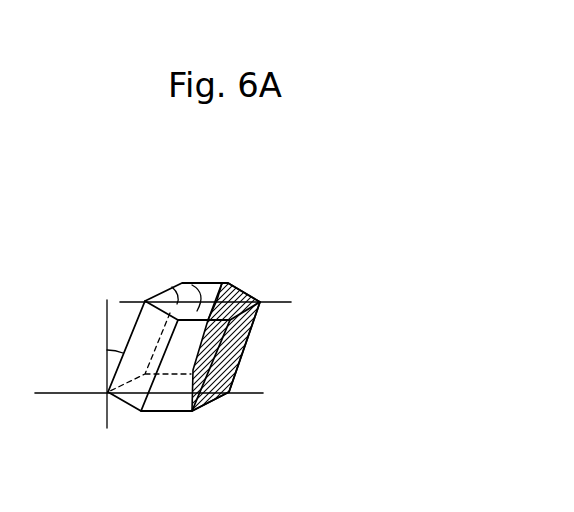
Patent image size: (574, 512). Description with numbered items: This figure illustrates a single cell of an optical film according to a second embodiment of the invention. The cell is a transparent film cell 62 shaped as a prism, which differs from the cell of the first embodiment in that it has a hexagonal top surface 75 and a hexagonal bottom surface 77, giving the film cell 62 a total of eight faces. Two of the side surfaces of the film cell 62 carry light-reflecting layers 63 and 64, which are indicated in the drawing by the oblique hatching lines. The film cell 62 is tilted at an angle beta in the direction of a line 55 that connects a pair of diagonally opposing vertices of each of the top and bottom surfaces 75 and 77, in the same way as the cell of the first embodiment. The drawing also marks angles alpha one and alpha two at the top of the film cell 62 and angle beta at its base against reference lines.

The transparent film cell 62 is at (289, 276).
The top surface 75 is at (215, 293).
The light-reflecting layer 64 is at (238, 293).
The light-reflecting layer 63 is at (240, 362).
The line connecting a pair of diagonally opposing vertices 55 is at (261, 302).
The bottom surface 77 is at (162, 403).